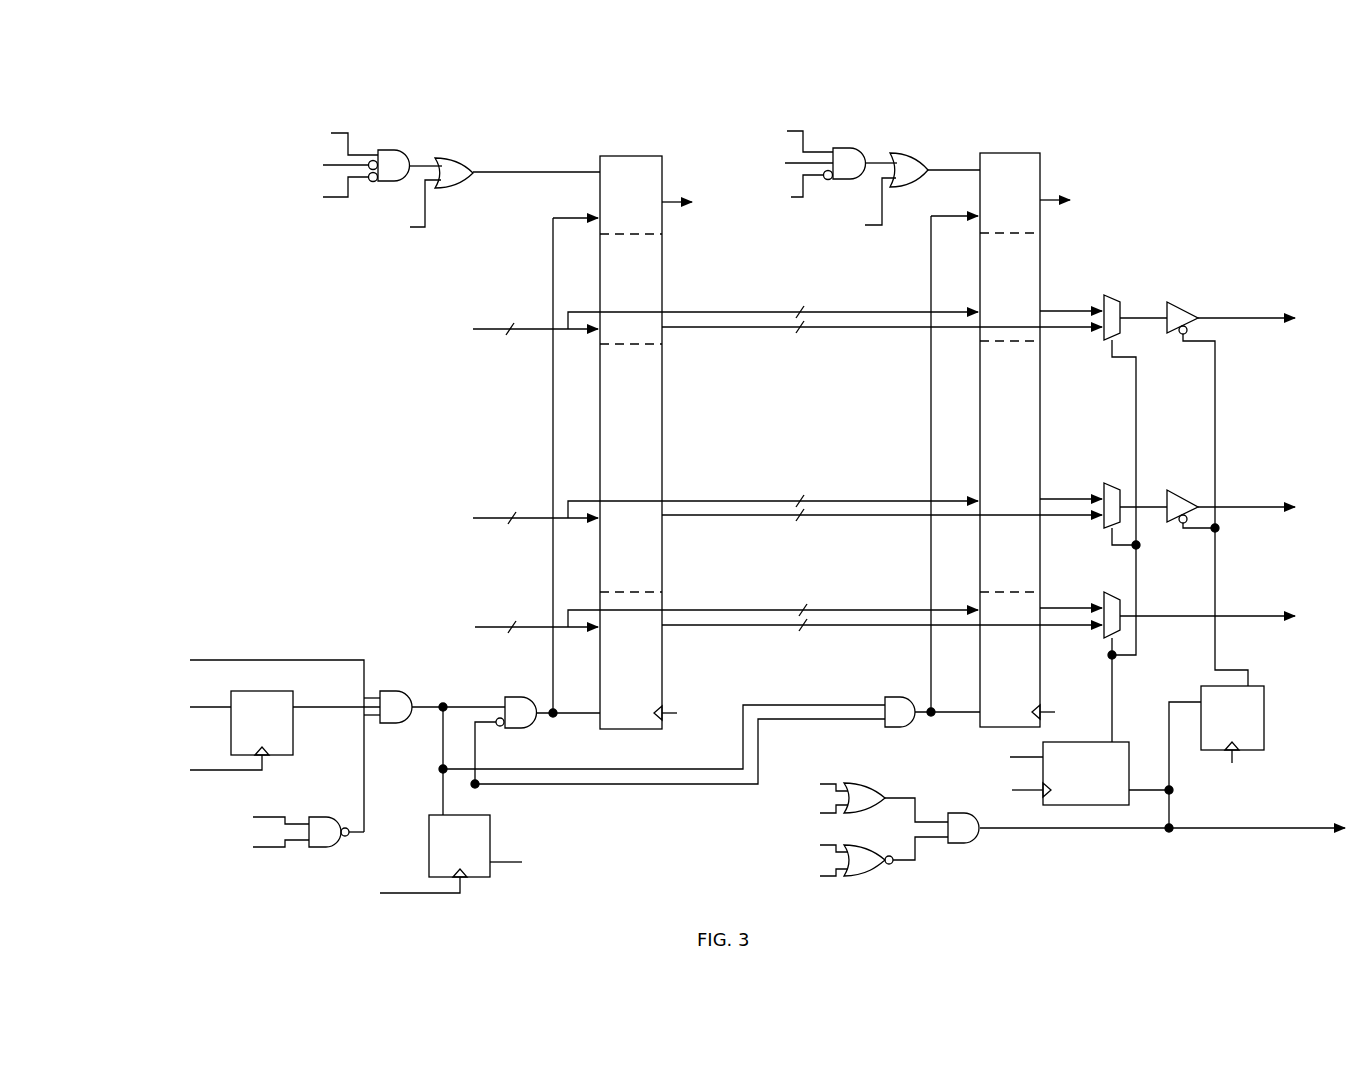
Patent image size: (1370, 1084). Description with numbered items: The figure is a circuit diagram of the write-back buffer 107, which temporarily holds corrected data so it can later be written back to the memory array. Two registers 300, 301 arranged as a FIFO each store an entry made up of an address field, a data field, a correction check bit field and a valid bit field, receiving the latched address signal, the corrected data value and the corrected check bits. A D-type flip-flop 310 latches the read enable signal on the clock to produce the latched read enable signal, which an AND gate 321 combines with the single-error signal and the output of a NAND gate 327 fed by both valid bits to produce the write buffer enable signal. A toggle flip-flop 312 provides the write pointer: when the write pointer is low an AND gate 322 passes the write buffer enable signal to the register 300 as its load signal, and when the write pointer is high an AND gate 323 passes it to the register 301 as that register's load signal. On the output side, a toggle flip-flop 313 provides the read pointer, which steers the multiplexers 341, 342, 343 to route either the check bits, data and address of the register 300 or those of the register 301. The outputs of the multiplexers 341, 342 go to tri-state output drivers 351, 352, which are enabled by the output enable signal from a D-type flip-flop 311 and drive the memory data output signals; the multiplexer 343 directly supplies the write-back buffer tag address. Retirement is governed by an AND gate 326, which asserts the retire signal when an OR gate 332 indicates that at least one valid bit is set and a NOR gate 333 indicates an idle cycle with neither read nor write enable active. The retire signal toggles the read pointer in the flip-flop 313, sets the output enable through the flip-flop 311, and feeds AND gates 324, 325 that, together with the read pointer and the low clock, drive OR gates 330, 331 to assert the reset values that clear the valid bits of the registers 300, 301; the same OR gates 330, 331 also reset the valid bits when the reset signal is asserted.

The write-back buffer 107 is at (252, 315).
The register 300 is at (629, 155).
The register 301 is at (1008, 152).
The D-type flip-flop 310 is at (279, 742).
The D-type flip-flop 311 is at (1250, 736).
The toggle flip-flop 312 is at (430, 851).
The toggle flip-flop 313 is at (1095, 801).
The AND gate 321 is at (398, 713).
The AND gate 322 is at (513, 724).
The AND gate 323 is at (893, 702).
The AND gate 324 is at (394, 158).
The AND gate 325 is at (850, 157).
The AND gate 326 is at (957, 838).
The NAND gate 327 is at (327, 823).
The OR gate 330 is at (447, 180).
The OR gate 331 is at (905, 178).
The OR gate 332 is at (862, 791).
The NOR gate 333 is at (862, 853).
The multiplexer 341 is at (1103, 337).
The multiplexer 342 is at (1103, 525).
The multiplexer 343 is at (1103, 635).
The tri-state output driver 351 is at (1183, 315).
The tri-state output driver 352 is at (1180, 503).